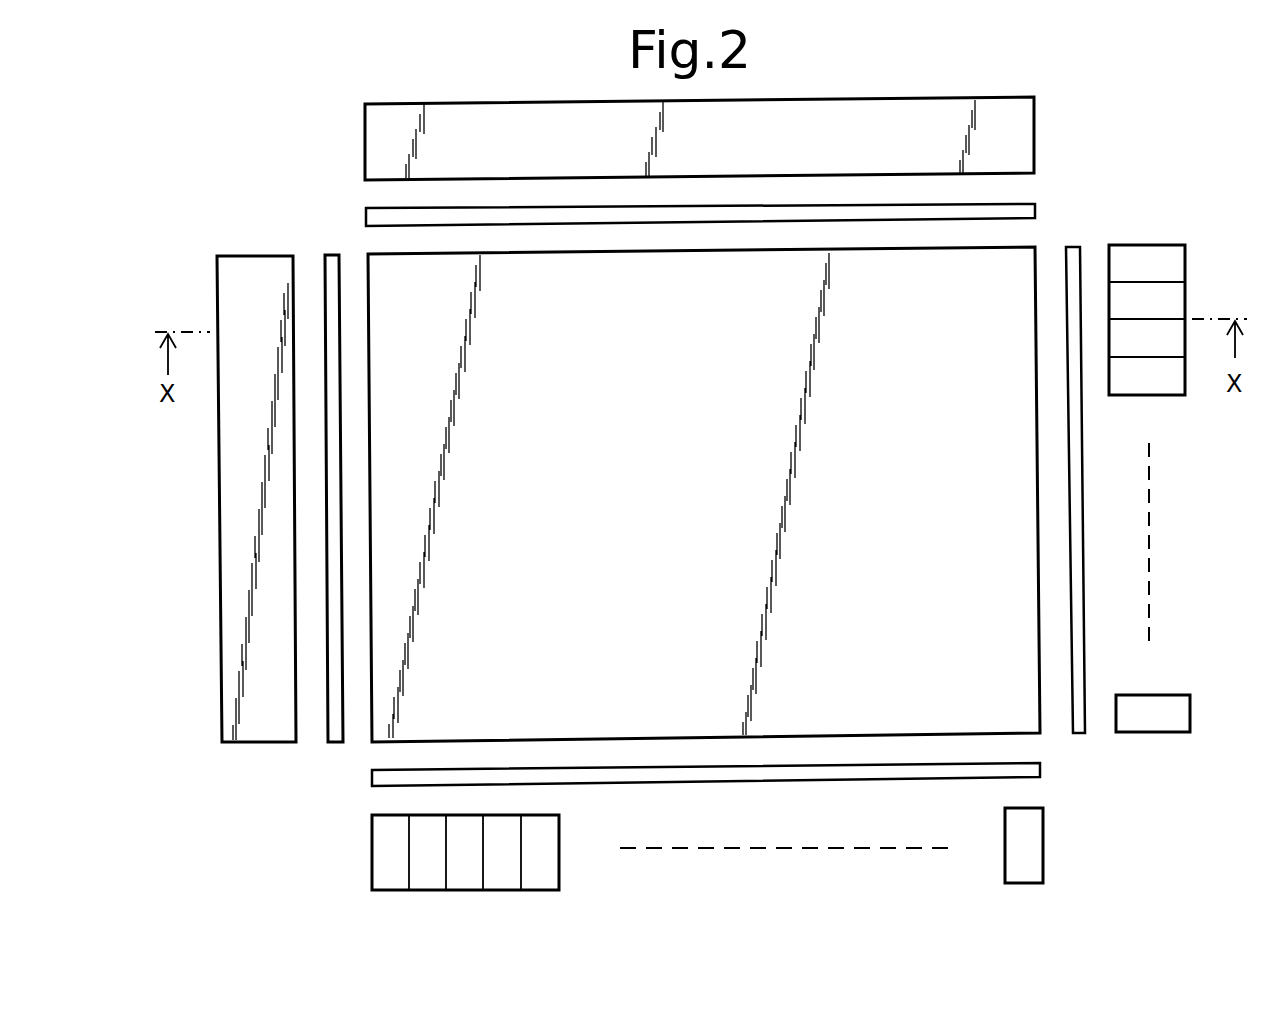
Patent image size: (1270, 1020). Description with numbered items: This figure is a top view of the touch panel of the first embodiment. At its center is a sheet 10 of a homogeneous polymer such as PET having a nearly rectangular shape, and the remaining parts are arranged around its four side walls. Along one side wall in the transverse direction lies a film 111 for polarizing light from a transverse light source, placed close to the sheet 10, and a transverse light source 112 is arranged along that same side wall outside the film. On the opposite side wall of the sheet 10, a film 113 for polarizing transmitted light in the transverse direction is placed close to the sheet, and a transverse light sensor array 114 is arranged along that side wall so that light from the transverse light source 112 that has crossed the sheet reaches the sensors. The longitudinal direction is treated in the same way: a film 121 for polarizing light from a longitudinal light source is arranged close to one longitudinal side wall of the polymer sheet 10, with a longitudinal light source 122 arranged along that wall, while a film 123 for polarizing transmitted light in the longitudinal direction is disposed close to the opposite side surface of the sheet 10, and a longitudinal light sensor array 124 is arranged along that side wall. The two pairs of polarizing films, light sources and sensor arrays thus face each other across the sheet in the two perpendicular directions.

The sheet 10 is at (383, 263).
The film for polarizing light from a transverse light source 111 is at (1030, 210).
The transverse light source 112 is at (1028, 131).
The film for polarizing transmitted light in the transverse direction 113 is at (1040, 778).
The transverse light sensor array 114 is at (1035, 851).
The film for polarizing light from a longitudinal light source 121 is at (333, 722).
The longitudinal light source 122 is at (252, 730).
The film for polarizing transmitted light in the longitudinal direction 123 is at (1082, 722).
The longitudinal light sensor array 124 is at (1182, 715).